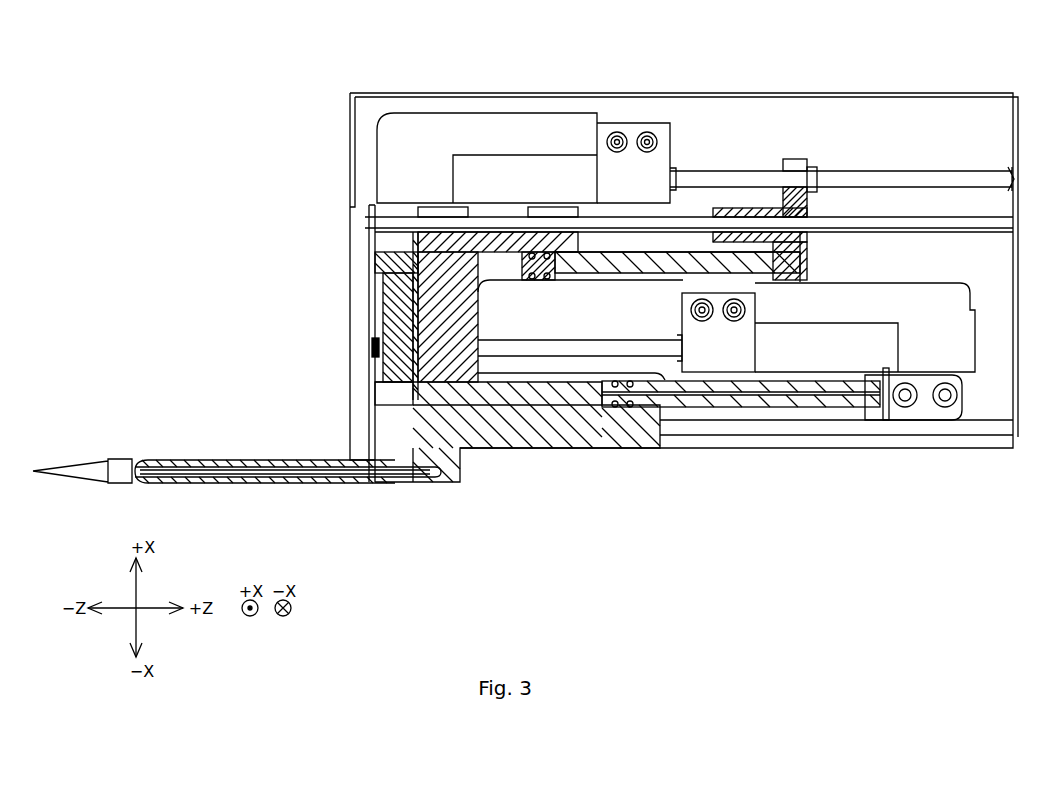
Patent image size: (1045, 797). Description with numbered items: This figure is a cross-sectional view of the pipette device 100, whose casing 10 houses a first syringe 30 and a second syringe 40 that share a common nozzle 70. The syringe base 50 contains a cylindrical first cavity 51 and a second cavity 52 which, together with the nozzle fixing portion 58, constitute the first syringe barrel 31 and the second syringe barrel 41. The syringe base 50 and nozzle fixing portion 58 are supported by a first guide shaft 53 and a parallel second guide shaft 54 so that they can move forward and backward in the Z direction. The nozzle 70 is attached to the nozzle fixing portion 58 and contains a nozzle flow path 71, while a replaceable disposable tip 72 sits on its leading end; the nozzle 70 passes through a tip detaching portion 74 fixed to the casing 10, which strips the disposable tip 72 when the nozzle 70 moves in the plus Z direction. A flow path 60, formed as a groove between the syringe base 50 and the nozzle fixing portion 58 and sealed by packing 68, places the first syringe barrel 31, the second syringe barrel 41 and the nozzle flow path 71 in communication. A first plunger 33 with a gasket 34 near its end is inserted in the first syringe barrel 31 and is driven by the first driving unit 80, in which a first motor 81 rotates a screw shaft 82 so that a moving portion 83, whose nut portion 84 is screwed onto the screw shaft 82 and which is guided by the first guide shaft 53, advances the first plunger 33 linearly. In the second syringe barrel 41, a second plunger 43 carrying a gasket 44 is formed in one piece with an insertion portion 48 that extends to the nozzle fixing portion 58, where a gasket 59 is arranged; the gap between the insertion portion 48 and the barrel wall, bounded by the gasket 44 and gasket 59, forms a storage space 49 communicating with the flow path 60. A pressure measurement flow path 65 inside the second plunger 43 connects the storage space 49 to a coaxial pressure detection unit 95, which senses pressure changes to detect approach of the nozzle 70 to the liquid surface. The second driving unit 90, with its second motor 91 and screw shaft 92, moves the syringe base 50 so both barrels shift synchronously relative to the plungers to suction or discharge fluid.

The pipette device 100 is at (722, 67).
The casing 10 is at (893, 92).
The first syringe 30 is at (609, 168).
The first syringe barrel 31 is at (448, 235).
The first plunger 33 is at (775, 266).
The gasket 34 is at (548, 283).
The second syringe 40 is at (517, 442).
The second syringe barrel 41 is at (540, 450).
The second plunger 43 is at (741, 437).
The gasket 44 is at (628, 408).
The insertion portion 48 is at (478, 452).
The storage space 49 is at (917, 411).
The syringe base 50 is at (481, 322).
The first cavity 51 is at (515, 235).
The second cavity 52 is at (512, 450).
The first guide shaft 53 is at (957, 234).
The second guide shaft 54 is at (822, 436).
The nozzle fixing portion 58 is at (377, 290).
The gasket 59 is at (376, 406).
The flow path 60 is at (380, 322).
The pressure measurement flow path 65 is at (727, 408).
The packing 68 is at (374, 352).
The nozzle 70 is at (237, 442).
The nozzle flow path 71 is at (260, 466).
The disposable tip 72 is at (121, 459).
The tip detaching portion 74 is at (352, 238).
The first driving unit 80 is at (523, 113).
The first motor 81 is at (577, 130).
The screw shaft 82 is at (735, 178).
The moving portion 83 is at (798, 160).
The nut portion 84 is at (812, 167).
The second driving unit 90 is at (828, 304).
The second motor 91 is at (892, 284).
The screw shaft 92 is at (630, 342).
The pressure detection unit 95 is at (884, 421).